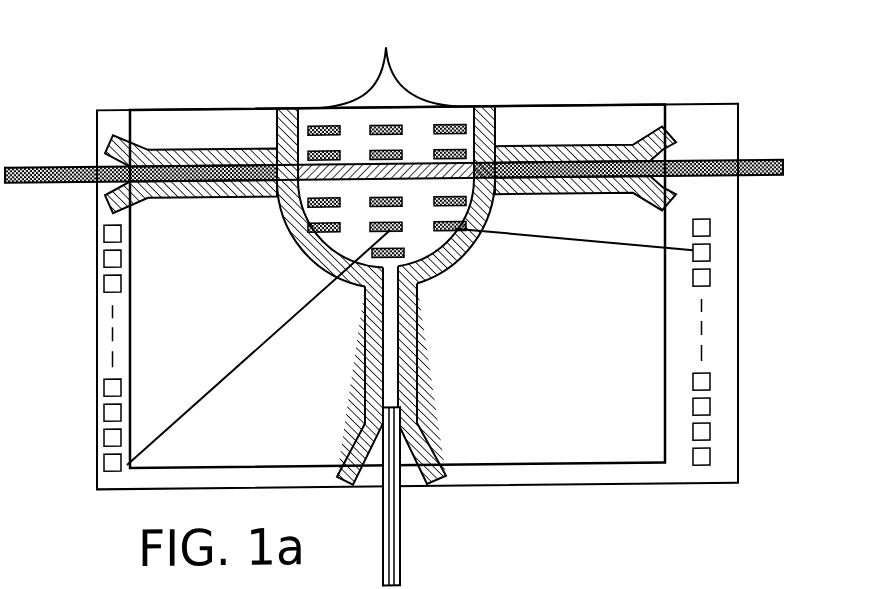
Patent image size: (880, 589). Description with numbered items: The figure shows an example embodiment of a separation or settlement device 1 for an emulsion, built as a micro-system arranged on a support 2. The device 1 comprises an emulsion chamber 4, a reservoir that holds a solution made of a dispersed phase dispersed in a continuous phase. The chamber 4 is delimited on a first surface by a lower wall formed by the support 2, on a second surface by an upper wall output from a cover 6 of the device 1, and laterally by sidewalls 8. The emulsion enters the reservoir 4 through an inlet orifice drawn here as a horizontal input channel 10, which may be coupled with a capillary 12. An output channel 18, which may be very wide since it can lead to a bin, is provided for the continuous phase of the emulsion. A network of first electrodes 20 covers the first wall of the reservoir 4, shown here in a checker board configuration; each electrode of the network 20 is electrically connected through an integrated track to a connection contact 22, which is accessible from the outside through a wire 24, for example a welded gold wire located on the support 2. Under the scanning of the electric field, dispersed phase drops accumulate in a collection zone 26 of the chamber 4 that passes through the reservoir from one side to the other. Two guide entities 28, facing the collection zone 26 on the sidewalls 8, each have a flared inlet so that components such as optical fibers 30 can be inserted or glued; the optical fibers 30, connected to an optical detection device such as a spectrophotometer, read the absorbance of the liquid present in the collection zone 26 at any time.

The separation device 1 is at (77, 468).
The support 2 is at (697, 121).
The emulsion chamber 4 is at (450, 117).
The cover 6 is at (178, 124).
The sidewalls 8 is at (284, 108).
The horizontal input channel 10 is at (414, 373).
The capillary 12 is at (390, 553).
The output channel 18 is at (380, 68).
The network of first electrodes 20 is at (310, 242).
The connection contact 22 is at (708, 385).
The wire 24 is at (104, 281).
The collection zone 26 is at (472, 233).
The guide entities 28 is at (570, 152).
The optical fibers 30 is at (74, 178).